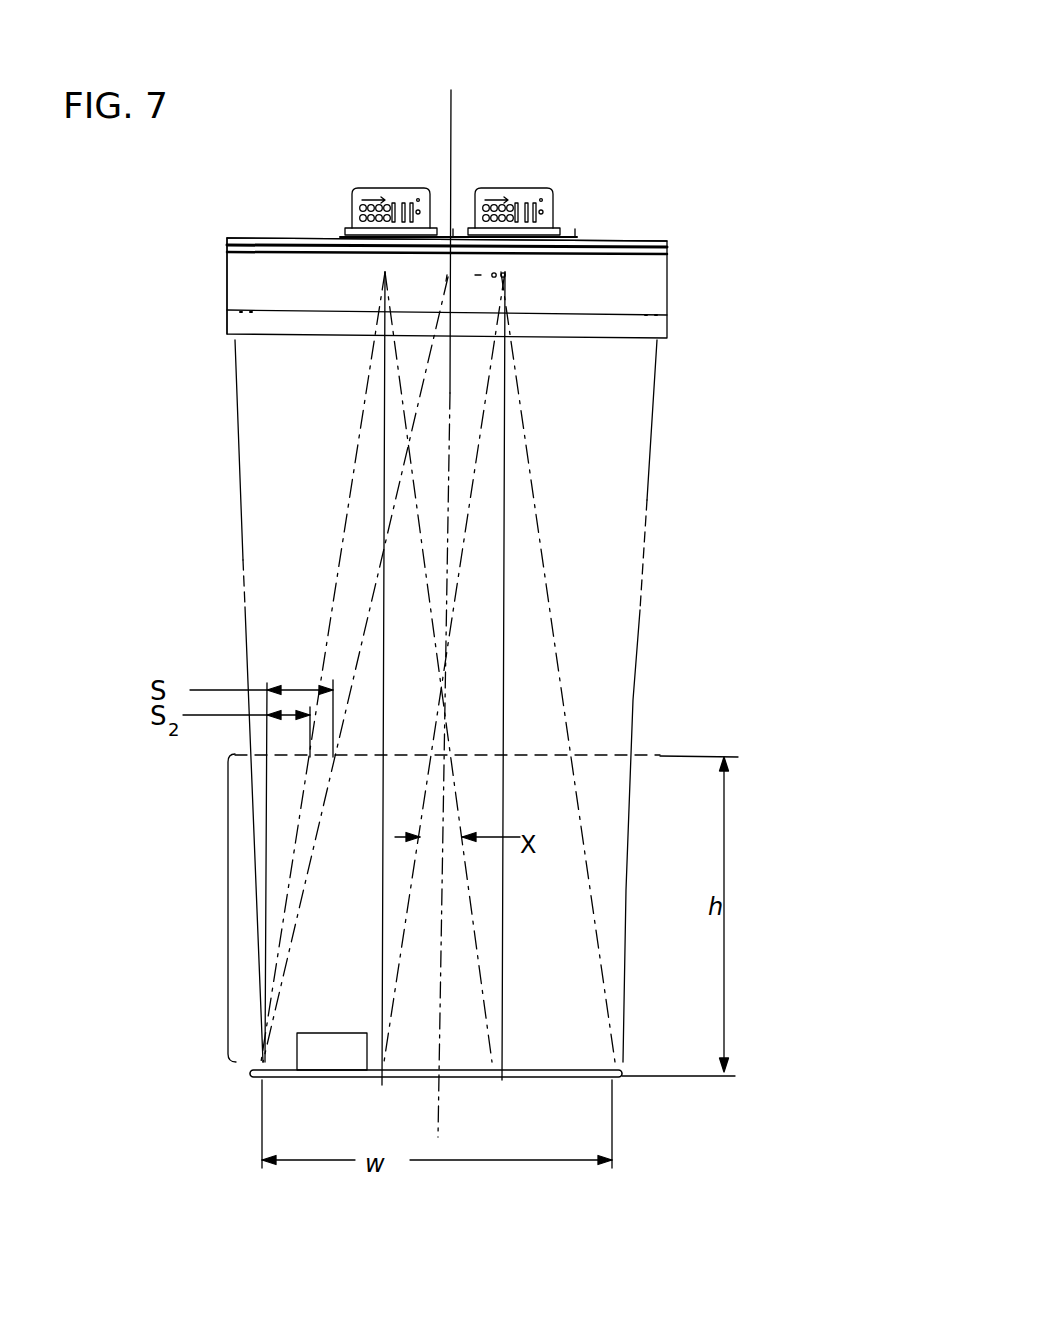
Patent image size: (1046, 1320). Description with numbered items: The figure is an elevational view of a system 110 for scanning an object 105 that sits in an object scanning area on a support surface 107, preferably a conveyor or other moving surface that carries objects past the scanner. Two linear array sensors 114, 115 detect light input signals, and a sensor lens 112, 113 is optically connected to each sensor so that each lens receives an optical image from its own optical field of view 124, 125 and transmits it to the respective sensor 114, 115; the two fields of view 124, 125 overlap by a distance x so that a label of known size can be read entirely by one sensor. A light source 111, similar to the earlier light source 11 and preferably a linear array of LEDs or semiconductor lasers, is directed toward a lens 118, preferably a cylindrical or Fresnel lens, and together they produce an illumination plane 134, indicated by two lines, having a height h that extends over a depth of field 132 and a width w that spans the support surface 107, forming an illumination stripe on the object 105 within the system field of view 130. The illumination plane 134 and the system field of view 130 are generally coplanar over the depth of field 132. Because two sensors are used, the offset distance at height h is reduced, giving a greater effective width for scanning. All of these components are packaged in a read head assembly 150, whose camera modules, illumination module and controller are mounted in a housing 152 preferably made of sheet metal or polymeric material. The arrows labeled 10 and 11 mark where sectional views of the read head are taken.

The section line 10- 10 is at (158, 319).
The light source 11 is at (163, 172).
The object 105 is at (358, 1064).
The support surface 107 is at (520, 1078).
The system 110 is at (622, 144).
The light source 111 is at (635, 242).
The sensor lens 112 is at (373, 242).
The sensor lens 113 is at (522, 243).
The linear array sensor 114 is at (390, 205).
The linear array sensor 115 is at (510, 218).
The lens 118 is at (617, 313).
The optical field of view 124 is at (343, 531).
The optical field of view 125 is at (543, 515).
The system field of view 130 is at (288, 832).
The depth of field 132 is at (228, 903).
The illumination plane 134 is at (233, 631).
The read head assembly 150 is at (667, 265).
The housing 152 is at (240, 278).